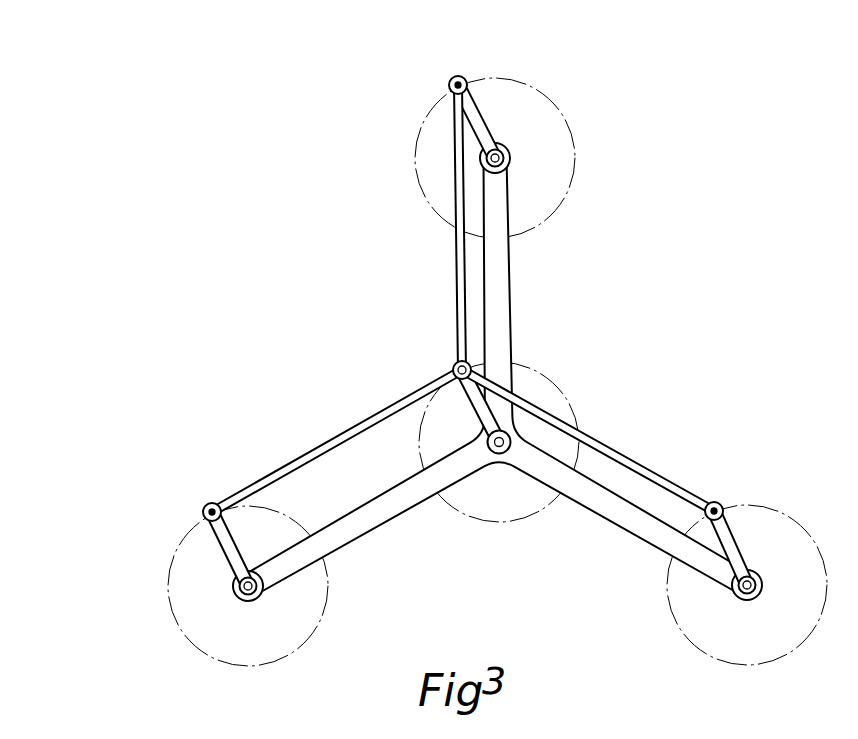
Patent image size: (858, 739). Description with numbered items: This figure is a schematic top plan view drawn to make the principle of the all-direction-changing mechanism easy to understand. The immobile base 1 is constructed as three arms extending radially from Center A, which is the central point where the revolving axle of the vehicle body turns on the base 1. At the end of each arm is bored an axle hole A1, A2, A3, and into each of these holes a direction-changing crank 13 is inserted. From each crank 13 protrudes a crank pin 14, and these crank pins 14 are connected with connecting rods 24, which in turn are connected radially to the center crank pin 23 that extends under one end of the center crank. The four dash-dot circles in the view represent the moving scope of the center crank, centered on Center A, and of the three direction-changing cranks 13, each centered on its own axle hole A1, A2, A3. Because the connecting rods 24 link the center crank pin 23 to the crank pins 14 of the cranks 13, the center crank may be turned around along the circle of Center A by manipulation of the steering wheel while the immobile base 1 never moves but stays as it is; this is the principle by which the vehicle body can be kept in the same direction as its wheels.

The immobile base 1 is at (505, 297).
The direction-changing crank 13 is at (126, 530).
The crank pin 14 is at (460, 271).
The center crank pin 23 is at (455, 365).
The connecting rod 24 is at (459, 277).
The Center A is at (495, 462).
The axle hole A1 is at (187, 621).
The axle hole A2 is at (507, 150).
The axle hole A3 is at (777, 641).